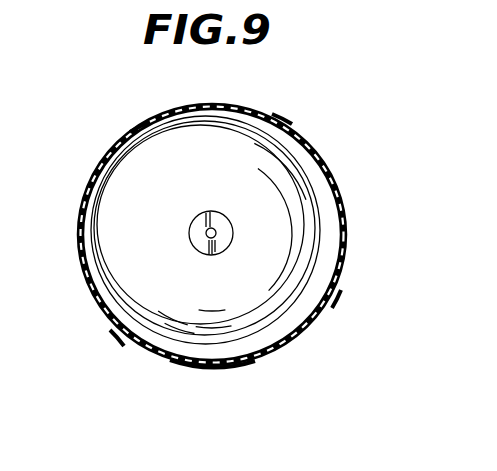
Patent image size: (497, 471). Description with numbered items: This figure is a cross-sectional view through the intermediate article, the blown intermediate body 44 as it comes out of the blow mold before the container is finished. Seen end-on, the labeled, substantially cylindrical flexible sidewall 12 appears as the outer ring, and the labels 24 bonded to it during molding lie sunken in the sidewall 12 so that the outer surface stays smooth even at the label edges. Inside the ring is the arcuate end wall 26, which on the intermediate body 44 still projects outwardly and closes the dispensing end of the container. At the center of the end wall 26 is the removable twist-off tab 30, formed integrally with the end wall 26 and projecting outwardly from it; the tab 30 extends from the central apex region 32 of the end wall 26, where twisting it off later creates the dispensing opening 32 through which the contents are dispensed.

The flexible sidewall 12 is at (250, 106).
The label 24 is at (321, 150).
The arcuate end wall 26 is at (141, 176).
The removable tab 30 is at (196, 242).
The dispensing opening 32 is at (233, 192).
The intermediate body 44 is at (246, 363).